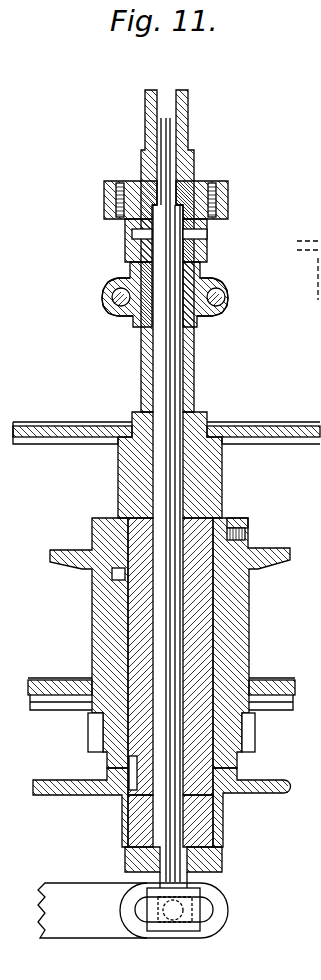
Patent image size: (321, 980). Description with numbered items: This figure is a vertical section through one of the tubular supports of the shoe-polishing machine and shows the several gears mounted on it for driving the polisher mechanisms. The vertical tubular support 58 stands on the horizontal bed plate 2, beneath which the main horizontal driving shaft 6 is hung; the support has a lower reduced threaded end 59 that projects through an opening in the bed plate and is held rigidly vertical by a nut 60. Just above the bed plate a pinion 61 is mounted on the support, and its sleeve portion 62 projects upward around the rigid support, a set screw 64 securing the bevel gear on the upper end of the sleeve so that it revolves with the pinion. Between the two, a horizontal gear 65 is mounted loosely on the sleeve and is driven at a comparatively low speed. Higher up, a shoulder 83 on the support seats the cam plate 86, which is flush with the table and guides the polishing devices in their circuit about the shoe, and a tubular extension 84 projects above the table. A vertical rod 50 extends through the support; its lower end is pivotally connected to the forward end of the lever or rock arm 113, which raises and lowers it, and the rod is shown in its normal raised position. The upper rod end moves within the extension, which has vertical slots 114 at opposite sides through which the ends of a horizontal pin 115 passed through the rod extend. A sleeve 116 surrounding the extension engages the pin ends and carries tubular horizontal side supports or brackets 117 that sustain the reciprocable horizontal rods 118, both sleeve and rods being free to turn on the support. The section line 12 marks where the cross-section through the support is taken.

The bed plate 2 is at (272, 790).
The main horizontal driving shaft 6 is at (288, 550).
The section line 12 is at (125, 238).
The vertical rod 50 is at (160, 636).
The vertical tubular support 58 is at (200, 495).
The lower reduced threaded end 59 is at (143, 832).
The nut 60 is at (222, 863).
The pinion 61 is at (235, 740).
The sleeve portion 62 is at (225, 632).
The set screw 64 is at (250, 531).
The horizontal gear 65 is at (279, 680).
The shoulder 83 is at (128, 518).
The tubular extension 84 is at (196, 379).
The cam plate 86 is at (60, 428).
The lever or rock arm 113 is at (133, 910).
The vertical slots 114 is at (150, 308).
The horizontal pin 115 is at (125, 248).
The sleeve 116 is at (205, 272).
The tubular horizontal side supports or brackets 117 is at (108, 308).
The reciprocable horizontal rods 118 is at (113, 293).